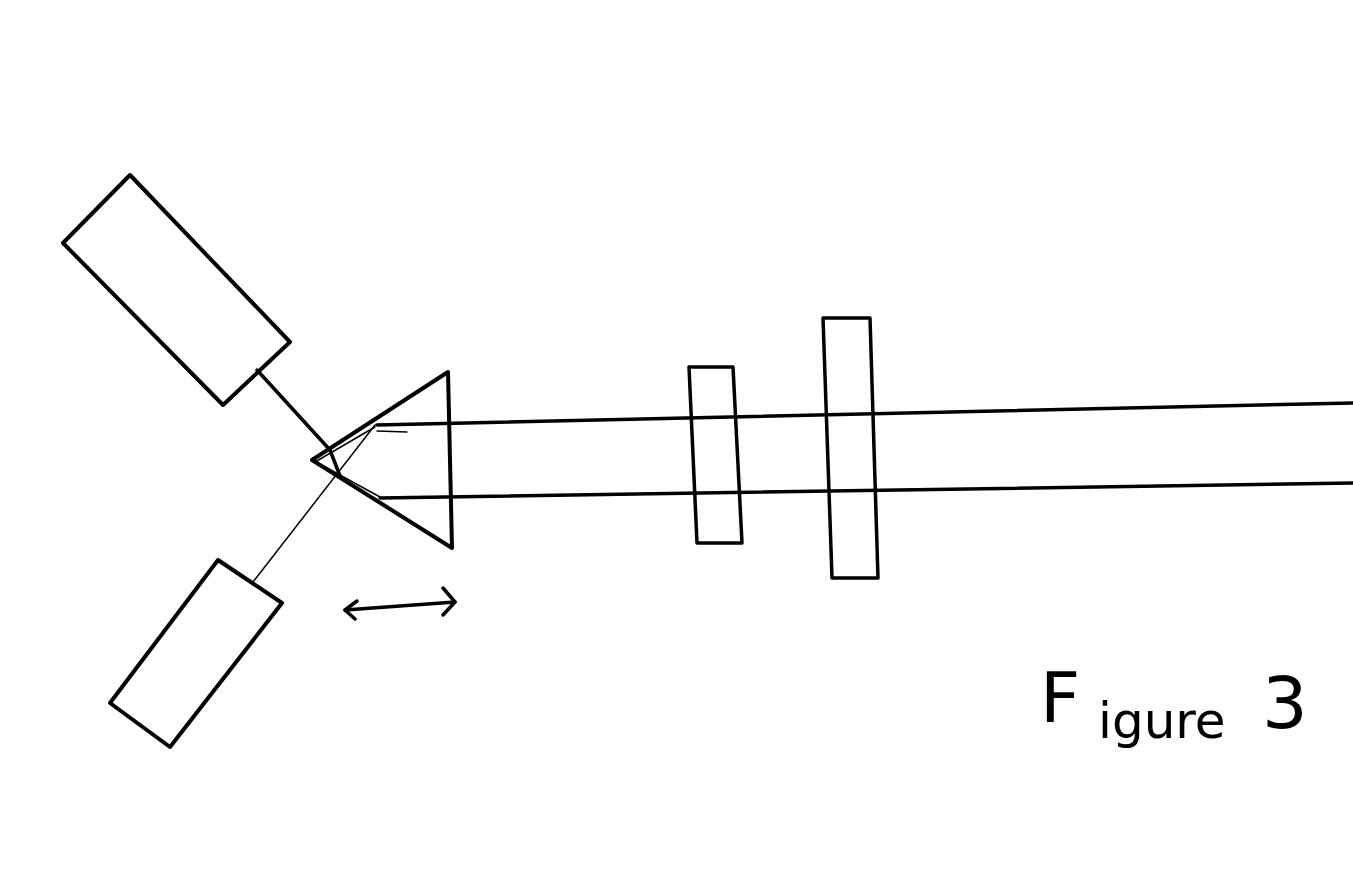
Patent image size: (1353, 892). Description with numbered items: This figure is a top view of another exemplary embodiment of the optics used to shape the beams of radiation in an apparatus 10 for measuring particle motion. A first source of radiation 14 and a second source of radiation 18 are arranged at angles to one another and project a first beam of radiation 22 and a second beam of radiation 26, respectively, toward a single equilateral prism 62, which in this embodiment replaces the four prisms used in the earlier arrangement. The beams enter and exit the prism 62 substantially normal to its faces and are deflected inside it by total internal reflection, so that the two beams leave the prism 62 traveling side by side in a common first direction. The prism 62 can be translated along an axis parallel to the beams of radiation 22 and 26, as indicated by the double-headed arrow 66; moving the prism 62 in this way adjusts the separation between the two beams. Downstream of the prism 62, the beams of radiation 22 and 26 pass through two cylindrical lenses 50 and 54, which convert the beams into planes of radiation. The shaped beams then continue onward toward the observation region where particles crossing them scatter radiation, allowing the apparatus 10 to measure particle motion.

The apparatus 10 is at (813, 187).
The first source of radiation 14 is at (227, 677).
The second source of radiation 18 is at (178, 228).
The first beam of radiation 22 is at (1133, 488).
The second beam of radiation 26 is at (1091, 408).
The cylindrical lens 50 is at (700, 365).
The cylindrical lens 54 is at (845, 318).
The equilateral prism 62 is at (423, 388).
The arrow 66 is at (395, 611).